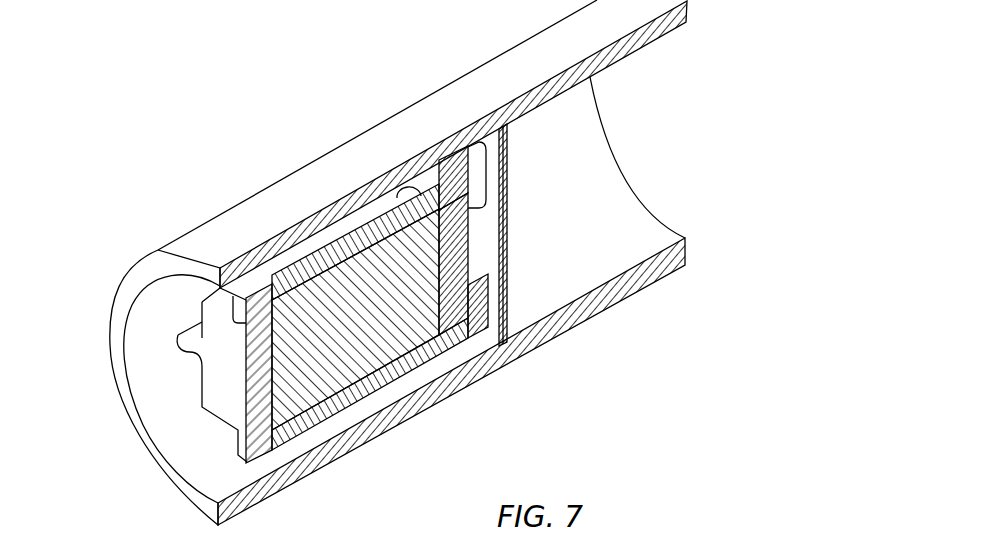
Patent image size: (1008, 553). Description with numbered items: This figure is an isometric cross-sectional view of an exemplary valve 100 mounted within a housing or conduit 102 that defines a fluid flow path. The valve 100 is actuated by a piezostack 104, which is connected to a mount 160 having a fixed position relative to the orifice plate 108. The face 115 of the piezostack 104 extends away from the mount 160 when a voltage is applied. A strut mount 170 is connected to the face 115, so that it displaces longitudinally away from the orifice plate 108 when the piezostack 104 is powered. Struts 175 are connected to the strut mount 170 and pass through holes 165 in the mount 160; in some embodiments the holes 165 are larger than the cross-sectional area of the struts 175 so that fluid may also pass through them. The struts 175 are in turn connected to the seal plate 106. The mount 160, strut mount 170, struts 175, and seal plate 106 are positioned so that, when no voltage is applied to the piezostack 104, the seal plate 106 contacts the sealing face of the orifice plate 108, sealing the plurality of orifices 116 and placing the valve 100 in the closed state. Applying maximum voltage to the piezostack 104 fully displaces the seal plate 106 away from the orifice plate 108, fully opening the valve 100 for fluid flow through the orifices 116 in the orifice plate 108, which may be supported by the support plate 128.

The valve 100 is at (210, 103).
The housing or conduit 102 is at (592, 303).
The piezostack 104 is at (303, 348).
The seal plate 106 is at (466, 150).
The orifice plate 108 is at (505, 245).
The support plate 128 is at (510, 208).
The face of the piezostack 115 is at (295, 405).
The orifices 116 is at (480, 354).
The mount 160 is at (440, 397).
The holes 165 is at (421, 188).
The strut mount 170 is at (228, 392).
The struts 175 is at (316, 272).